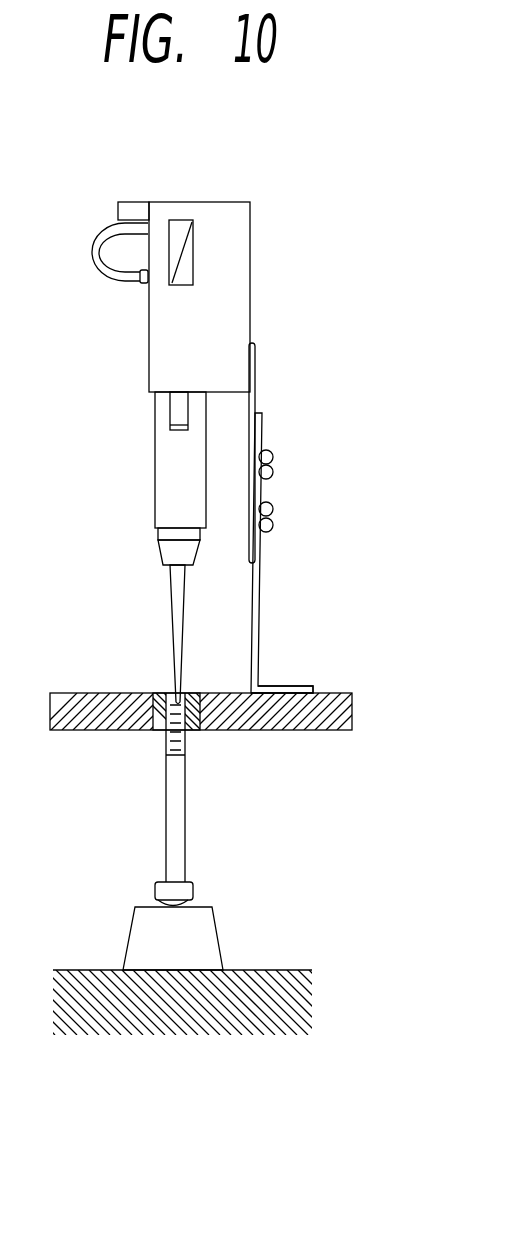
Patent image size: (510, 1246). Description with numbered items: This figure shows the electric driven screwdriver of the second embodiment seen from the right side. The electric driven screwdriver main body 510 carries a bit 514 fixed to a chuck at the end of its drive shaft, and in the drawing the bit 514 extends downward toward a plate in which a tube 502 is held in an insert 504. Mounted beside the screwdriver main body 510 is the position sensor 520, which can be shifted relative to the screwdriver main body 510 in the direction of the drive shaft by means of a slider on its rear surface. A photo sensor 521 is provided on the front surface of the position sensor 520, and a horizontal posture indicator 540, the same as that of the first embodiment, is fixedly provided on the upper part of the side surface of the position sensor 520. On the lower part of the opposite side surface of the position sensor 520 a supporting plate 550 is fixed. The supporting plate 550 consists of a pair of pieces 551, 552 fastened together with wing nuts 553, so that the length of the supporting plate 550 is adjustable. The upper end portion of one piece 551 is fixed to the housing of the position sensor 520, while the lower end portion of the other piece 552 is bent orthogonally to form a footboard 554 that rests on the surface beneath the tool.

The tube 502 is at (185, 815).
The insert / bushing in plate 504 is at (160, 732).
The electric driven screwdriver main body 510 is at (153, 483).
The bit 514 is at (168, 637).
The position sensor 520 is at (153, 355).
The photo sensor 521 is at (188, 248).
The horizontal posture indicator 540 is at (128, 201).
The supporting plate 550 is at (310, 504).
The piece 551 is at (255, 355).
The piece 552 is at (260, 622).
The wing nuts 553 is at (276, 465).
The footboard 554 is at (302, 684).